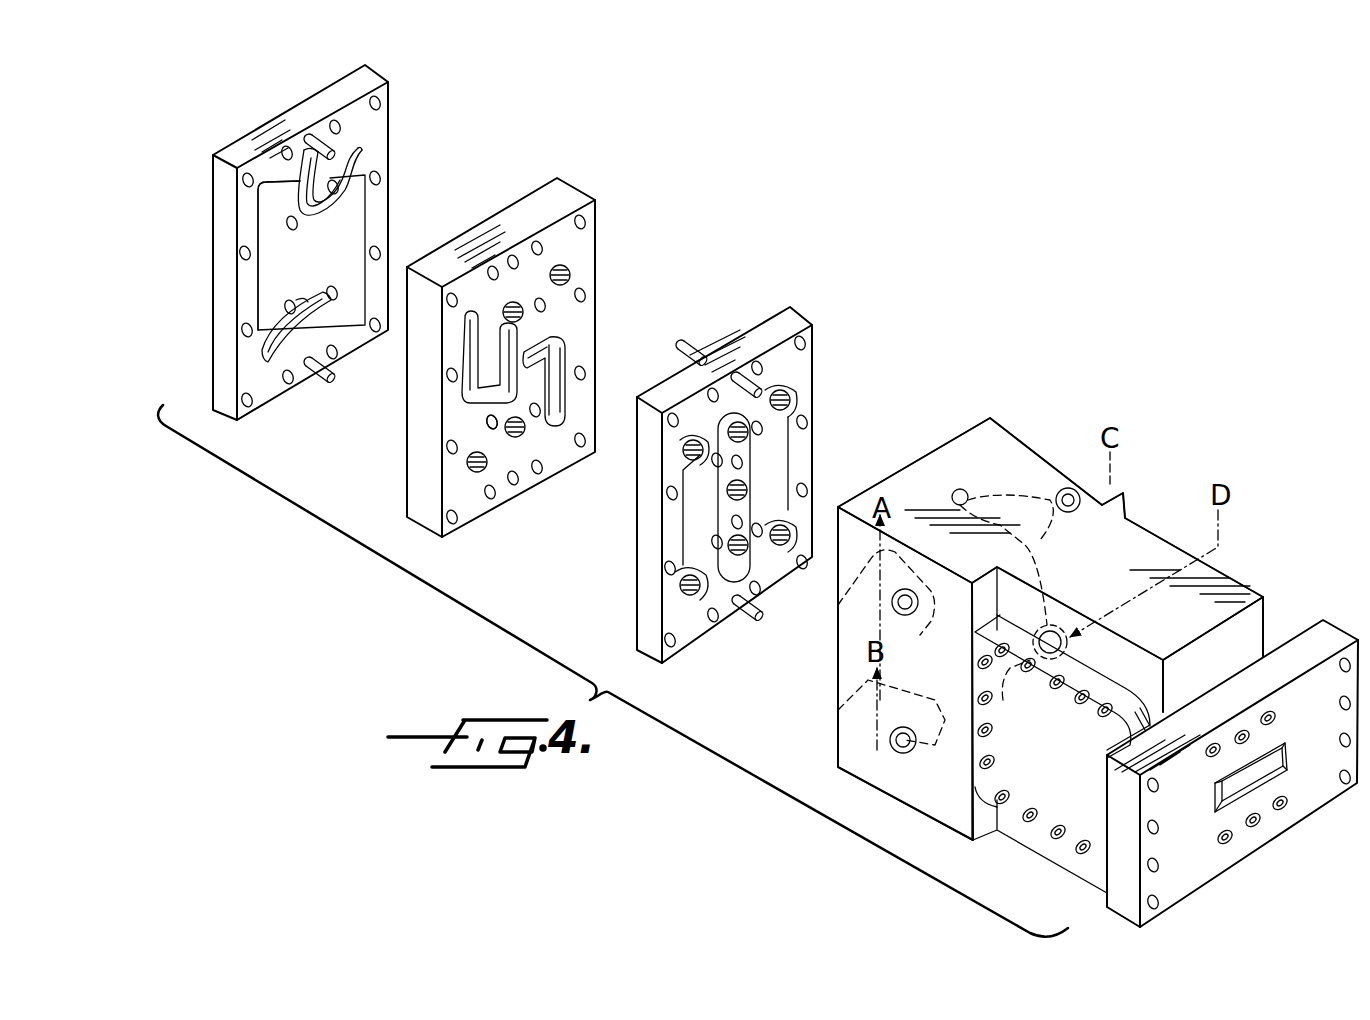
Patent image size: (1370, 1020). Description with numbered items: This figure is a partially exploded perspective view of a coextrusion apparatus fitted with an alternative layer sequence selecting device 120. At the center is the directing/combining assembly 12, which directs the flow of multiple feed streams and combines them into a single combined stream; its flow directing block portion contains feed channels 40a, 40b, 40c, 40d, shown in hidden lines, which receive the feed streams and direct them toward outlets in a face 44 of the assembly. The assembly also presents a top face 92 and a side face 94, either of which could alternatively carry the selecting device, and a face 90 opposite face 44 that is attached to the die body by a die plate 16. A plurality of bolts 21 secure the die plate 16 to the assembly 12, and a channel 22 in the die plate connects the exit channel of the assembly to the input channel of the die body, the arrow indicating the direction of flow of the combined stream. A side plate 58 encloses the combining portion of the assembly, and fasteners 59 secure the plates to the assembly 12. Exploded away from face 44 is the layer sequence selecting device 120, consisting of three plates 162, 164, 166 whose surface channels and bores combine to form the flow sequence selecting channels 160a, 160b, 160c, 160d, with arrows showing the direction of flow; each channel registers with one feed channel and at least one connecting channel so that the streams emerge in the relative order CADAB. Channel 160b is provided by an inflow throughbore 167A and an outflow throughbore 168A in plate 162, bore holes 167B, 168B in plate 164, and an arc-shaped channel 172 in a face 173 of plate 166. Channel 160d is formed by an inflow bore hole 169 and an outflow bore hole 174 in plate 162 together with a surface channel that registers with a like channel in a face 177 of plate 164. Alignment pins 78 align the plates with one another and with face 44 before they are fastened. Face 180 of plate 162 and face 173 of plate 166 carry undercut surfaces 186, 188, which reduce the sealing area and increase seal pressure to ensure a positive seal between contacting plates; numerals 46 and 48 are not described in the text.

The assembly 12 is at (1008, 412).
The die plate 16 is at (1330, 633).
The bolts 21 is at (1215, 752).
The channel 22 is at (1247, 783).
The feed channel 40a is at (843, 670).
The feed channel 40b is at (866, 690).
The feed channel 40c is at (1010, 555).
The feed channel 40d is at (1027, 699).
The face 44 is at (912, 490).
The bottom edge 46 is at (945, 800).
The port 48 is at (1068, 488).
The side plate 58 is at (1096, 666).
The fasteners 59 is at (1028, 823).
The alignment pins 78 is at (318, 135).
The face 90 is at (1228, 672).
The face 92 is at (998, 470).
The face 94 is at (865, 770).
The layer sequence selecting device 120 is at (775, 208).
The flow sequence selecting channel 160a is at (462, 397).
The flow sequence selecting channel 160b is at (254, 352).
The flow sequence selecting channel 160c is at (366, 147).
The flow sequence selecting channel 160d is at (569, 352).
The plate 162 is at (808, 312).
The plate 164 is at (580, 178).
The plate 166 is at (390, 67).
The throughbore 167A is at (688, 590).
The bore hole 167B is at (470, 464).
The throughbore 168A is at (735, 548).
The bore hole 168B is at (520, 434).
The bore hole 169 is at (790, 528).
The arc-shaped channel 172 is at (300, 298).
The face 173 is at (262, 398).
The bore hole 174 is at (734, 497).
The face 177 is at (500, 493).
The face 180 is at (792, 387).
The undercut surface 186 is at (770, 440).
The undercut surface 188 is at (268, 196).